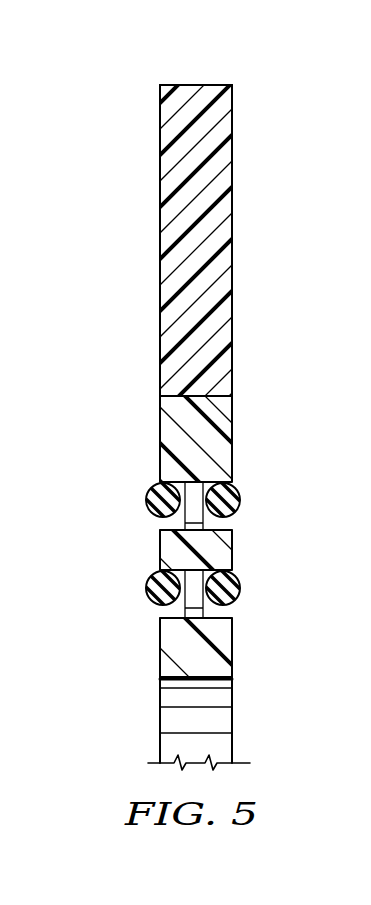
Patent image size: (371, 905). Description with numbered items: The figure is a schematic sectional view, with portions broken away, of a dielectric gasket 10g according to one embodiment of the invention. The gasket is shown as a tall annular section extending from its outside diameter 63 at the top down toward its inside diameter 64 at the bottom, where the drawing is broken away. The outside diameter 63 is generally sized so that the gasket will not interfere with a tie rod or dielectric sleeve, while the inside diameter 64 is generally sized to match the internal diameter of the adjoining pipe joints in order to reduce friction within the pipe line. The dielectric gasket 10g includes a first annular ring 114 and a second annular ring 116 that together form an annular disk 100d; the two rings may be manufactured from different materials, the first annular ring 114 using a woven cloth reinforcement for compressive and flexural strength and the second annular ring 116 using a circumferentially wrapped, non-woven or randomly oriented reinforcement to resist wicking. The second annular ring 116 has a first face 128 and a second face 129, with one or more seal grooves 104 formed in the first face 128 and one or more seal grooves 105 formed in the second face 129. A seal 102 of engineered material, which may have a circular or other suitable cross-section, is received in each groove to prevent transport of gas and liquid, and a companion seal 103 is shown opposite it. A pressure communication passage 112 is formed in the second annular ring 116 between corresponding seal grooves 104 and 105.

The dielectric gasket 10g is at (90, 122).
The outside diameter 63 is at (188, 85).
The annular disk 100d is at (160, 192).
The first annular ring 114 is at (232, 152).
The first face 128 is at (160, 330).
The second face 129 is at (232, 310).
The second annular ring 116 is at (232, 412).
The seal 102 is at (149, 491).
The ball 103 is at (238, 491).
The seal groove 104 is at (160, 531).
The seal groove 105 is at (222, 524).
The pressure communication passage 112 is at (201, 531).
The inside diameter 64 is at (190, 686).